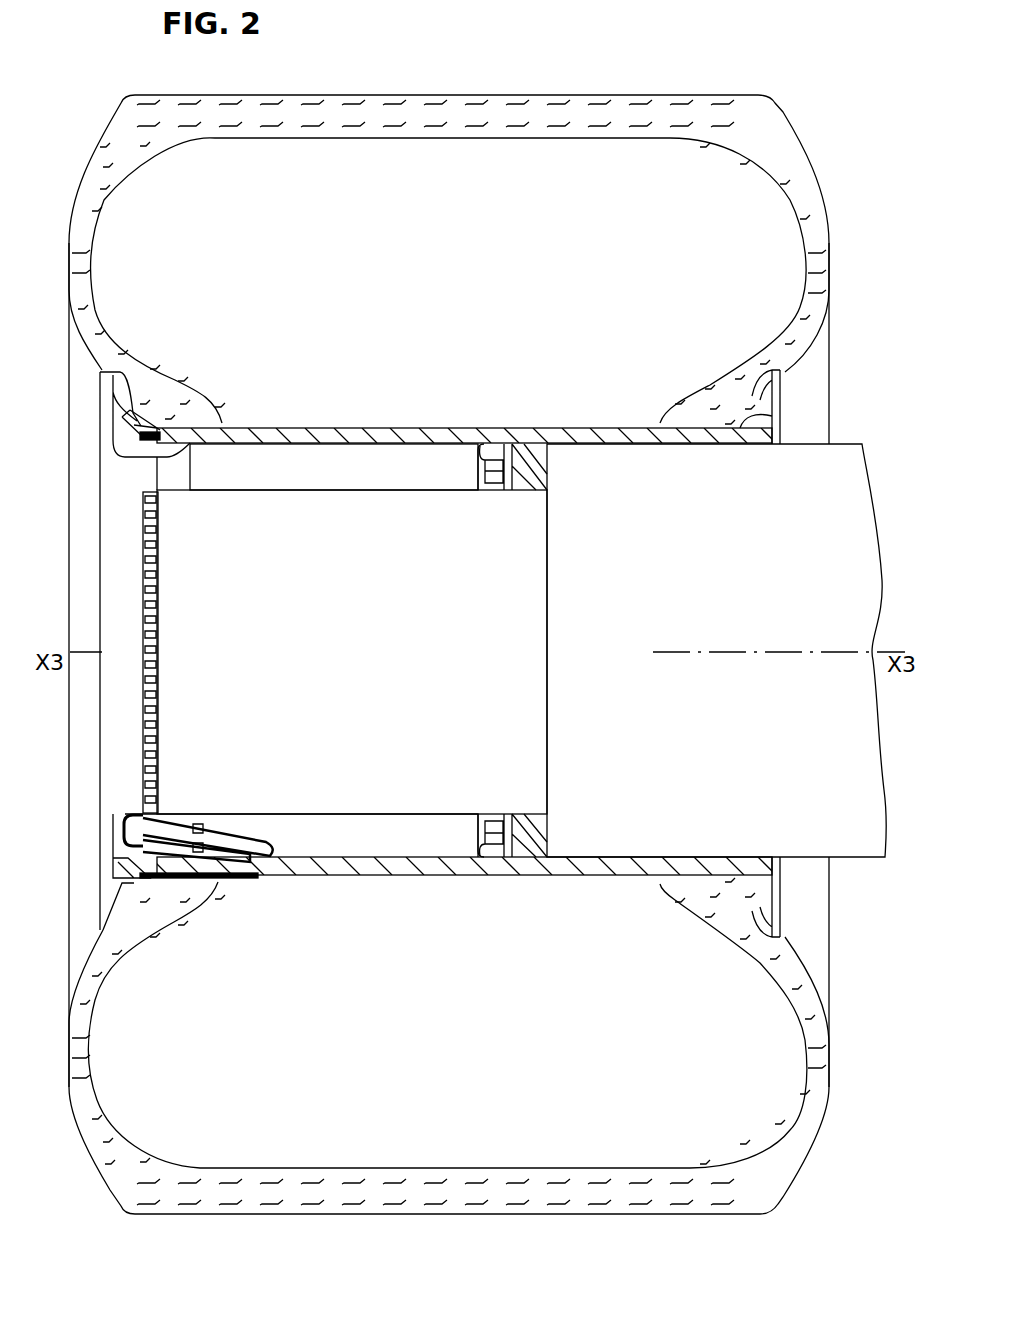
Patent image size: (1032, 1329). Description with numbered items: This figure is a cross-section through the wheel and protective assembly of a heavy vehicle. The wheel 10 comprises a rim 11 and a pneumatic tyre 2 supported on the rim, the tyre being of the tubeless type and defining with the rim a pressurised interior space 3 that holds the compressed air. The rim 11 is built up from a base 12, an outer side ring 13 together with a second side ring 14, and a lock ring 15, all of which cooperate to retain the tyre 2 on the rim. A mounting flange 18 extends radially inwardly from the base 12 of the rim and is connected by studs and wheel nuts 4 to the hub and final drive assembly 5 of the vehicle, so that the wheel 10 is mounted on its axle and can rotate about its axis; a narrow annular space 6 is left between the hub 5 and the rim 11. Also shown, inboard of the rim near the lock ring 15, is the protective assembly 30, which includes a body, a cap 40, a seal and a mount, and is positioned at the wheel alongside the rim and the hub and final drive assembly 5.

The pneumatic tyre 2 is at (829, 1083).
The pressurised interior space 3 is at (445, 994).
The wheel nuts 4 is at (478, 446).
The hub and final drive assembly 5 is at (408, 669).
The annular space 6 is at (338, 484).
The wheel 10 is at (863, 269).
The rim 11 is at (353, 878).
The base 12 is at (521, 878).
The outer side ring 13 is at (100, 572).
The side ring 14 is at (780, 914).
The lock ring 15 is at (117, 884).
The mounting flange 18 is at (485, 860).
The protective assembly 30 is at (203, 806).
The cap 40 is at (123, 826).